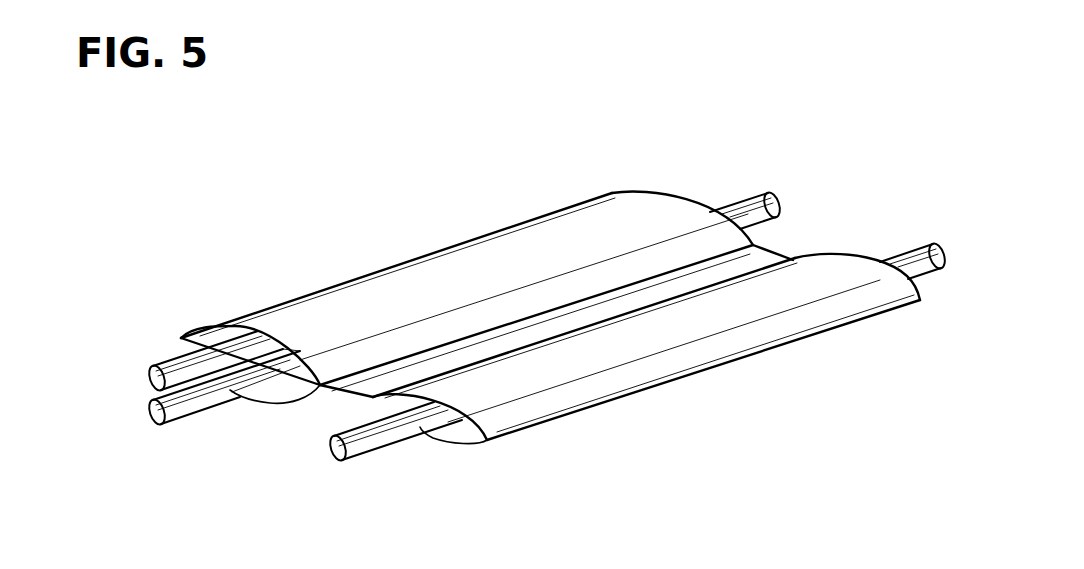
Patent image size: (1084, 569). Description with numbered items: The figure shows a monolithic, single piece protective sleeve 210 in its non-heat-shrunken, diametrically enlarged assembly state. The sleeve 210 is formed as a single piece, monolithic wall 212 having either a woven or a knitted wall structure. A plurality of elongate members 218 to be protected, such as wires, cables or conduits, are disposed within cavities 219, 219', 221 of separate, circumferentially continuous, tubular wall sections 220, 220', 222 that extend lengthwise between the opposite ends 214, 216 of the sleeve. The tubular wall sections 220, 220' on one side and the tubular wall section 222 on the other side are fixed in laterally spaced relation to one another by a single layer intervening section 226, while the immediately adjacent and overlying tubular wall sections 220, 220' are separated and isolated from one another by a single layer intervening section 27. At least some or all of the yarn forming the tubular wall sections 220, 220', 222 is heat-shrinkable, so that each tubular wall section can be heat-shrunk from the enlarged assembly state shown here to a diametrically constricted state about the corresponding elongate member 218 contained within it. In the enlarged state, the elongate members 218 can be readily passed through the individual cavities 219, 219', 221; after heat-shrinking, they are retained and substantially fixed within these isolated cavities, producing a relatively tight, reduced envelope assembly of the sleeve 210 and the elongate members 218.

The sleeve 210 is at (258, 163).
The wall 212 is at (287, 297).
The end 214 is at (488, 445).
The end 216 is at (918, 294).
The elongate member 218 is at (150, 377).
The cavity 219 is at (243, 321).
The cavity 219' is at (241, 405).
The tubular wall section 220 is at (524, 283).
The tubular wall section 220' is at (278, 423).
The cavity 221 is at (452, 437).
The tubular wall section 222 is at (693, 350).
The intervening section 226 is at (602, 307).
The intervening section 27 is at (297, 369).